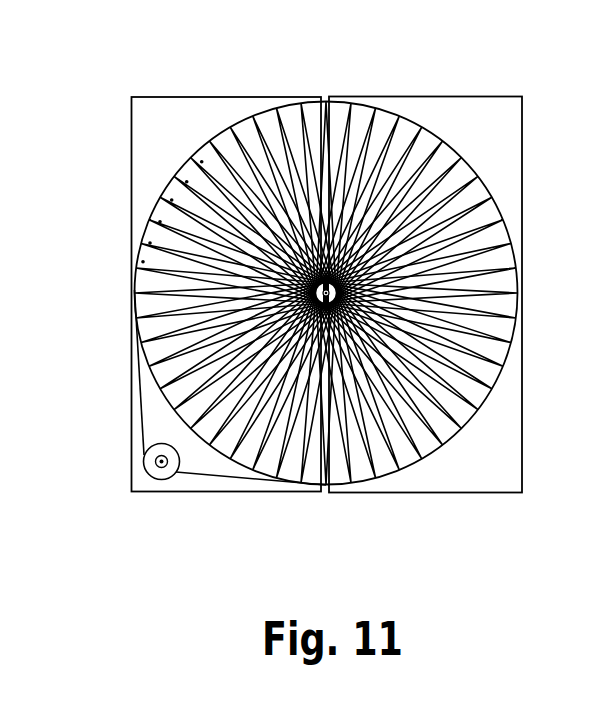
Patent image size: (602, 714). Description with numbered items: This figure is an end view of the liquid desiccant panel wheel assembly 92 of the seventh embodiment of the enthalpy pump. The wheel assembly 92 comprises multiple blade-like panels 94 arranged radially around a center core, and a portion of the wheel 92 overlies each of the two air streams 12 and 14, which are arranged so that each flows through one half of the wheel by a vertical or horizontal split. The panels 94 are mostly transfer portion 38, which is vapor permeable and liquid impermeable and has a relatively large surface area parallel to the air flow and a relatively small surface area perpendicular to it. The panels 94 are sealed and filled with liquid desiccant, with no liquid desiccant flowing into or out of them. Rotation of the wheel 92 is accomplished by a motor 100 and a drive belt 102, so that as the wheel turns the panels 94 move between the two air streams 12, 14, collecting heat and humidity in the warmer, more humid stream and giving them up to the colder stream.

The air stream 12 is at (425, 295).
The air stream 14 is at (227, 294).
The transfer portion 38 is at (202, 162).
The wheel assembly 92 is at (490, 388).
The blade-like panels 94 is at (258, 113).
The motor 100 is at (148, 476).
The drive belt 102 is at (193, 473).